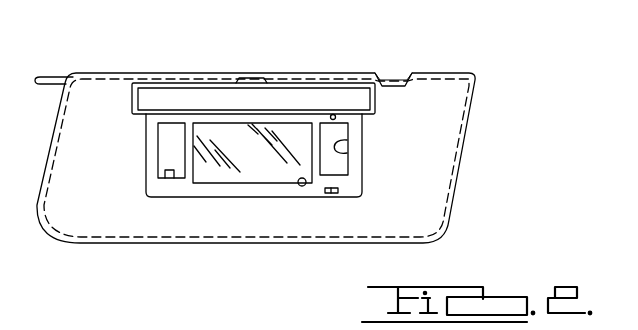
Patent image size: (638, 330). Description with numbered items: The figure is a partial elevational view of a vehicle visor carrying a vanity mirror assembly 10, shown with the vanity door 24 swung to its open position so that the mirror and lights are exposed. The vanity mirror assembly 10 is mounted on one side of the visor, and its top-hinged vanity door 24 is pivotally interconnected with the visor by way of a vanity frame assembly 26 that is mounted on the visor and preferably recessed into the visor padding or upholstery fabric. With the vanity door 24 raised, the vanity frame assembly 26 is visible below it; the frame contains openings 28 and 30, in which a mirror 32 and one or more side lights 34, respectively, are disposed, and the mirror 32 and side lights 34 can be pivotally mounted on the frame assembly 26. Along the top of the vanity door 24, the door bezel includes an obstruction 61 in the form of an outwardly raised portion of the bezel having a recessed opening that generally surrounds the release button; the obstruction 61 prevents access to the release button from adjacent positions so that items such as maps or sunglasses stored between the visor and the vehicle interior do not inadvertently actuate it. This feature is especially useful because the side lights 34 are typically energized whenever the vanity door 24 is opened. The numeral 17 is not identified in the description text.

The vanity mirror assembly 10 is at (257, 153).
The sun visor 17 is at (468, 133).
The vanity door 24 is at (223, 73).
The vanity frame assembly 26 is at (146, 145).
The opening 28 is at (302, 186).
The opening 30 is at (165, 172).
The mirror 32 is at (222, 176).
The side light 34 is at (167, 162).
The obstruction 61 is at (249, 78).